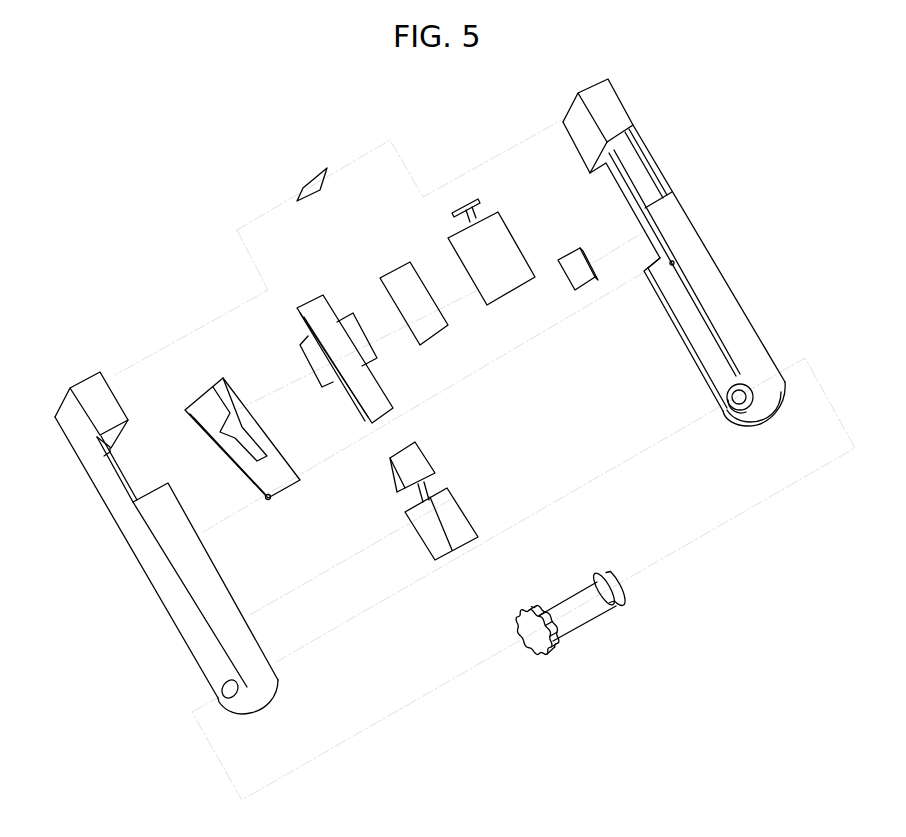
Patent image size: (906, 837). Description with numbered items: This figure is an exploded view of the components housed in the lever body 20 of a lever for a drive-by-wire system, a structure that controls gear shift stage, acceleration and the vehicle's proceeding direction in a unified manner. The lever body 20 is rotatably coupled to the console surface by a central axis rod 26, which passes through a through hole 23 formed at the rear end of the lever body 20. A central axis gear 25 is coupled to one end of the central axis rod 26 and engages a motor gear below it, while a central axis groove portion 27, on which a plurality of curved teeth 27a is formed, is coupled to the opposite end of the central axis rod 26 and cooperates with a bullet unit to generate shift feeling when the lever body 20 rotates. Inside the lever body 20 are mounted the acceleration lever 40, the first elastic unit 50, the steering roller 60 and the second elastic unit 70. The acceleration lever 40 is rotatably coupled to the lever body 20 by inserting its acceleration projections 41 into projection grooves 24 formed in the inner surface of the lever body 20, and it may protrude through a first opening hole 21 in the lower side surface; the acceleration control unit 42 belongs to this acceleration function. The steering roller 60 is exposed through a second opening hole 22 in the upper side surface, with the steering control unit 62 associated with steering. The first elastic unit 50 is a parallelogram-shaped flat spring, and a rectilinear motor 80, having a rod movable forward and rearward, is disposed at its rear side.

The lever body 20 is at (180, 607).
The first opening hole 21 is at (604, 200).
The second opening hole 22 is at (137, 452).
The through hole 23 is at (222, 684).
The projection grooves 24 is at (673, 262).
The central axis gear 25 is at (580, 605).
The central axis rod 26 is at (624, 585).
The central axis groove portion 27 is at (538, 634).
The curved teeth 27a is at (552, 645).
The acceleration lever 40 is at (206, 408).
The acceleration projections 41 is at (265, 497).
The acceleration control unit 42 is at (575, 267).
The first elastic unit 50 is at (313, 301).
The steering roller 60 is at (490, 229).
The steering control unit 62 is at (309, 175).
The second elastic unit 70 is at (402, 282).
The rectilinear motor 80 is at (431, 548).